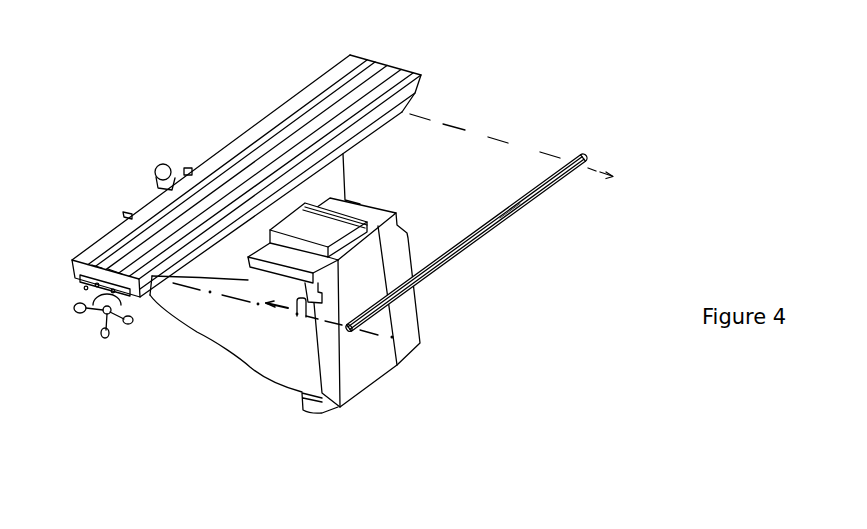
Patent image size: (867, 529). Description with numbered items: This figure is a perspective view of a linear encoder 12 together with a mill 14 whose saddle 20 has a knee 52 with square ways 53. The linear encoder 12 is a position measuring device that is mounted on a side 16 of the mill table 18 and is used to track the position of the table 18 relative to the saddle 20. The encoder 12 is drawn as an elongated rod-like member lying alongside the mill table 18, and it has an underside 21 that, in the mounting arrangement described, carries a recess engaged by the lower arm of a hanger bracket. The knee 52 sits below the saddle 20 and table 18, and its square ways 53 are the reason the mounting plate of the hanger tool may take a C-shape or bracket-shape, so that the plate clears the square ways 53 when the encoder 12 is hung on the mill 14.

The linear encoder 12 is at (547, 190).
The mill 14 is at (237, 343).
The side 16 is at (282, 186).
The mill table 18 is at (390, 62).
The saddle 20 is at (347, 167).
The underside 21 is at (510, 217).
The knee 52 is at (422, 315).
The square ways 53 is at (248, 280).